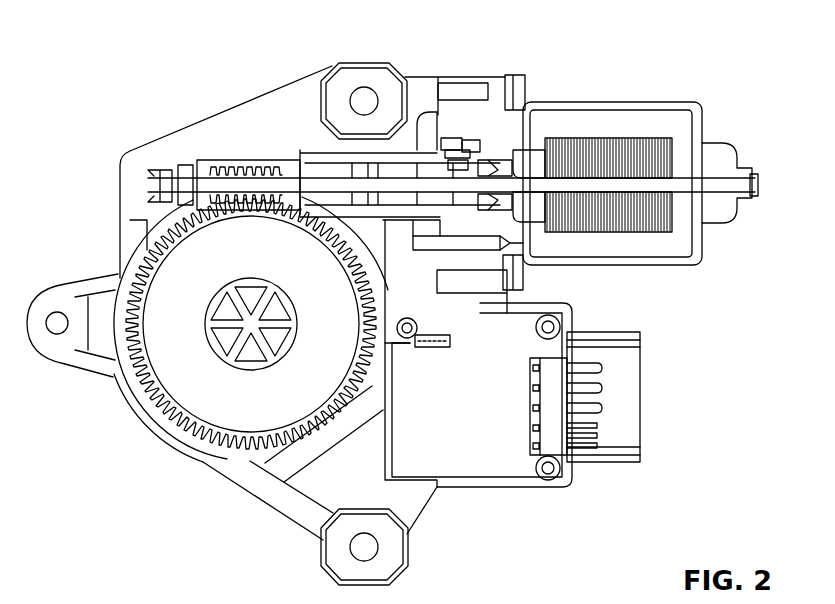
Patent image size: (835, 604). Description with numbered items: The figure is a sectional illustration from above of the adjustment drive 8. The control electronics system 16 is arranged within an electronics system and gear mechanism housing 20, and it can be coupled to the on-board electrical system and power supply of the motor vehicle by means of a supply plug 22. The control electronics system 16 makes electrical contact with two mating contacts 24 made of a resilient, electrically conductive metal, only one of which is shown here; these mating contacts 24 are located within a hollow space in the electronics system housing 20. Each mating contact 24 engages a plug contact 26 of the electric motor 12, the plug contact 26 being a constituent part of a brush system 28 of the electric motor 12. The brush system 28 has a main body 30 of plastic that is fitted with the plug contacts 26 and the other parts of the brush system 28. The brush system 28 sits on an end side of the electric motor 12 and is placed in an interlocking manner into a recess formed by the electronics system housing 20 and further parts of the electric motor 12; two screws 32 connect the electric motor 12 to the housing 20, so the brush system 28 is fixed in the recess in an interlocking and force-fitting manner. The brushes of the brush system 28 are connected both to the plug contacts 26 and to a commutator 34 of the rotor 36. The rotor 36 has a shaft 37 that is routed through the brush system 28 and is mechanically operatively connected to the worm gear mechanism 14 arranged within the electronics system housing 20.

The adjustment drive 8 is at (90, 107).
The electric motor 12 is at (600, 103).
The worm gear mechanism 14 is at (180, 266).
The control electronics system 16 is at (512, 473).
The electronics system and gear mechanism housing 20 is at (415, 515).
The supply plug 22 is at (612, 398).
The mating contact 24 is at (388, 290).
The plug contact 26 is at (461, 243).
The brush system 28 is at (471, 140).
The main body 30 is at (458, 138).
The screw 32 is at (523, 92).
The commutator 34 is at (482, 170).
The rotor 36 is at (604, 157).
The shaft 37 is at (313, 183).